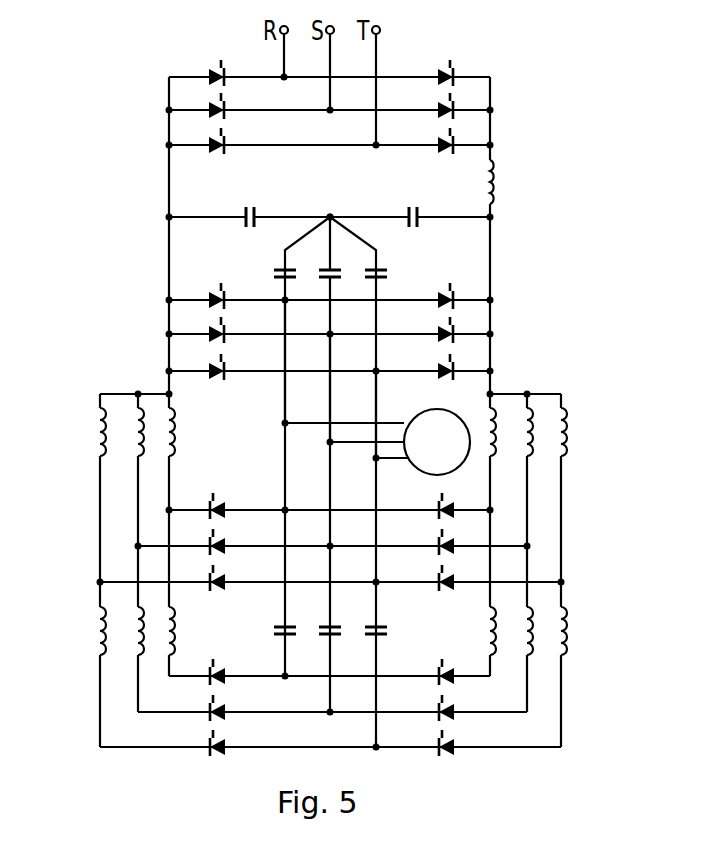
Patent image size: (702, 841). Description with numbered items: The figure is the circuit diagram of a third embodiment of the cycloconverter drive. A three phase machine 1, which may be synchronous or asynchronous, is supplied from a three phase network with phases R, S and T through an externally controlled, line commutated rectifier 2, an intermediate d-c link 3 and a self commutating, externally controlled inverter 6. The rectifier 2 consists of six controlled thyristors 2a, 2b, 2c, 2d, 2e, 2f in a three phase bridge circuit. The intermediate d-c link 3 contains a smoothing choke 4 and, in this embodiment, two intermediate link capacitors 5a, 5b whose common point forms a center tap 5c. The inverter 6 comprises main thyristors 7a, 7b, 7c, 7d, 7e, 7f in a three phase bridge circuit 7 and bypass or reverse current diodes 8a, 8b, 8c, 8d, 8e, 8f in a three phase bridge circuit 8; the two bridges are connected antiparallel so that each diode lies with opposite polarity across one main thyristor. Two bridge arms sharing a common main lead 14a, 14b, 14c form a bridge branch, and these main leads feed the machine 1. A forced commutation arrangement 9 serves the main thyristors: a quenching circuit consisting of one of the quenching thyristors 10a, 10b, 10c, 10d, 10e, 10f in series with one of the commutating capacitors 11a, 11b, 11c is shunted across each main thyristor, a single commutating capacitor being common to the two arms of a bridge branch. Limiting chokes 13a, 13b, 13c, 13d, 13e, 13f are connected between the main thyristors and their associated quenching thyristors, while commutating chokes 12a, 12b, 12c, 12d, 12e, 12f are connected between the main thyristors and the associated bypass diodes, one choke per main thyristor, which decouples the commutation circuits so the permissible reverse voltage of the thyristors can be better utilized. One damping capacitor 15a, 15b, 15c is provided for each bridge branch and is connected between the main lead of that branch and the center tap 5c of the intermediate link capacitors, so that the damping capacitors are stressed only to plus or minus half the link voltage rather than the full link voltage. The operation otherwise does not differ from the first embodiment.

The three phase machine 1 is at (415, 470).
The rectifier 2 is at (360, 106).
The controlled thyristor 2a is at (227, 86).
The controlled thyristor 2b is at (227, 119).
The controlled thyristor 2c is at (227, 154).
The controlled thyristor 2d is at (437, 84).
The controlled thyristor 2e is at (437, 118).
The controlled thyristor 2f is at (437, 153).
The intermediate d-c link 3 is at (335, 176).
The smoothing choke 4 is at (499, 182).
The intermediate link capacitor 5a is at (244, 211).
The intermediate link capacitor 5b is at (419, 213).
The center tap of the intermediate link capacitors 5c is at (332, 215).
The inverter 6 is at (251, 453).
The three phase bridge circuit of main thyristors 7 is at (360, 574).
The main thyristor 7a is at (226, 510).
The main thyristor 7b is at (226, 545).
The main thyristor 7c is at (226, 581).
The main thyristor 7d is at (436, 512).
The main thyristor 7e is at (436, 548).
The main thyristor 7f is at (436, 584).
The three phase bridge circuit of bypass diodes 8 is at (315, 366).
The bypass diode 8a is at (225, 298).
The bypass diode 8b is at (225, 332).
The bypass diode 8c is at (225, 369).
The bypass diode 8d is at (444, 298).
The bypass diode 8e is at (444, 333).
The bypass diode 8f is at (444, 369).
The forced commutation arrangement 9 is at (321, 706).
The quenching thyristor 10a is at (227, 675).
The quenching thyristor 10b is at (227, 711).
The quenching thyristor 10c is at (227, 745).
The quenching thyristor 10d is at (436, 674).
The quenching thyristor 10e is at (436, 708).
The quenching thyristor 10f is at (436, 745).
The commutating capacitor 11a is at (280, 628).
The commutating capacitor 11b is at (326, 628).
The commutating capacitor 11c is at (372, 628).
The commutating choke 12a is at (172, 418).
The commutating choke 12b is at (137, 418).
The commutating choke 12c is at (98, 432).
The commutating choke 12d is at (487, 425).
The commutating choke 12e is at (530, 420).
The commutating choke 12f is at (566, 425).
The limiting choke 13a is at (172, 625).
The limiting choke 13b is at (135, 620).
The limiting choke 13c is at (98, 640).
The limiting choke 13d is at (485, 628).
The limiting choke 13e is at (531, 628).
The limiting choke 13f is at (567, 632).
The main lead 14a is at (286, 302).
The main lead 14b is at (331, 336).
The main lead 14c is at (377, 372).
The damping capacitor 15a is at (282, 270).
The damping capacitor 15b is at (335, 270).
The damping capacitor 15c is at (386, 279).